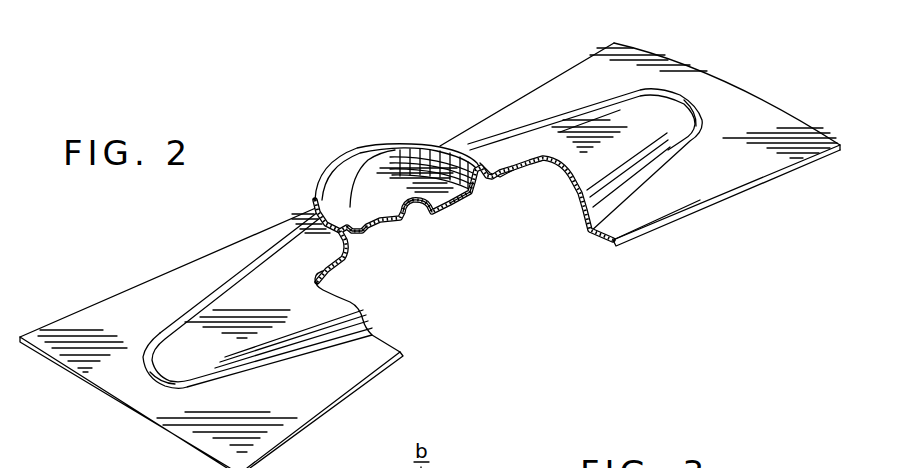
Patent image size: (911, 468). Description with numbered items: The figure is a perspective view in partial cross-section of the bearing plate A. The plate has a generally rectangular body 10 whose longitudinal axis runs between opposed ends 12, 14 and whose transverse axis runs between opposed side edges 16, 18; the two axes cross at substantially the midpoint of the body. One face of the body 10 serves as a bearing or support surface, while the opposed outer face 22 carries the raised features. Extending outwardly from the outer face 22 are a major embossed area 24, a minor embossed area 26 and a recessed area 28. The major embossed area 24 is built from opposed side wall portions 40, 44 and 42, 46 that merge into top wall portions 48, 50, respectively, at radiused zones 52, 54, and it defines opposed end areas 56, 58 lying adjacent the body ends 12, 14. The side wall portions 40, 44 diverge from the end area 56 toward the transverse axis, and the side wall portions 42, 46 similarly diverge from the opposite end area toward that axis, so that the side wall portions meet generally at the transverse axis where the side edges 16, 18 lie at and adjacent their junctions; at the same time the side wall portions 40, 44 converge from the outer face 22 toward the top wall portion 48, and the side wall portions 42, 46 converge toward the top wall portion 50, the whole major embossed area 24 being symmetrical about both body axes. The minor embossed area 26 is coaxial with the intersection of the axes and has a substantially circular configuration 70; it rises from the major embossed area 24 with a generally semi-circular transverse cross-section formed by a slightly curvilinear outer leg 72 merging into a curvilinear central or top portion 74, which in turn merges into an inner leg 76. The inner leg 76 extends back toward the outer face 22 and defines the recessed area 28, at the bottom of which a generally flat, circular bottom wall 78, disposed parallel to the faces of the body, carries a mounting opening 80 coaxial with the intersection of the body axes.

The body 10 is at (430, 255).
The end 12 is at (160, 441).
The end 14 is at (757, 95).
The side edge 16 is at (652, 228).
The side edge 18 is at (537, 84).
The outer face 22 is at (762, 170).
The major embossed area 24 is at (250, 256).
The minor embossed area 26 is at (317, 158).
The recessed area 28 is at (393, 178).
The side wall portion 40 is at (288, 352).
The side wall portion 42 is at (633, 170).
The side wall portion 44 is at (162, 333).
The side wall portion 46 is at (607, 97).
The top wall portion 48 is at (259, 299).
The top wall portion 50 is at (659, 121).
The radiused zone 52 is at (331, 322).
The radiused zone 54 is at (545, 119).
The end area 56 is at (163, 377).
The end area 58 is at (697, 118).
The circular configuration 70 is at (370, 156).
The outer leg 72 is at (343, 237).
The central or top portion 74 is at (317, 213).
The inner leg 76 is at (372, 234).
The bottom wall 78 is at (467, 190).
The mounting opening 80 is at (426, 208).
The bearing plate A is at (425, 134).